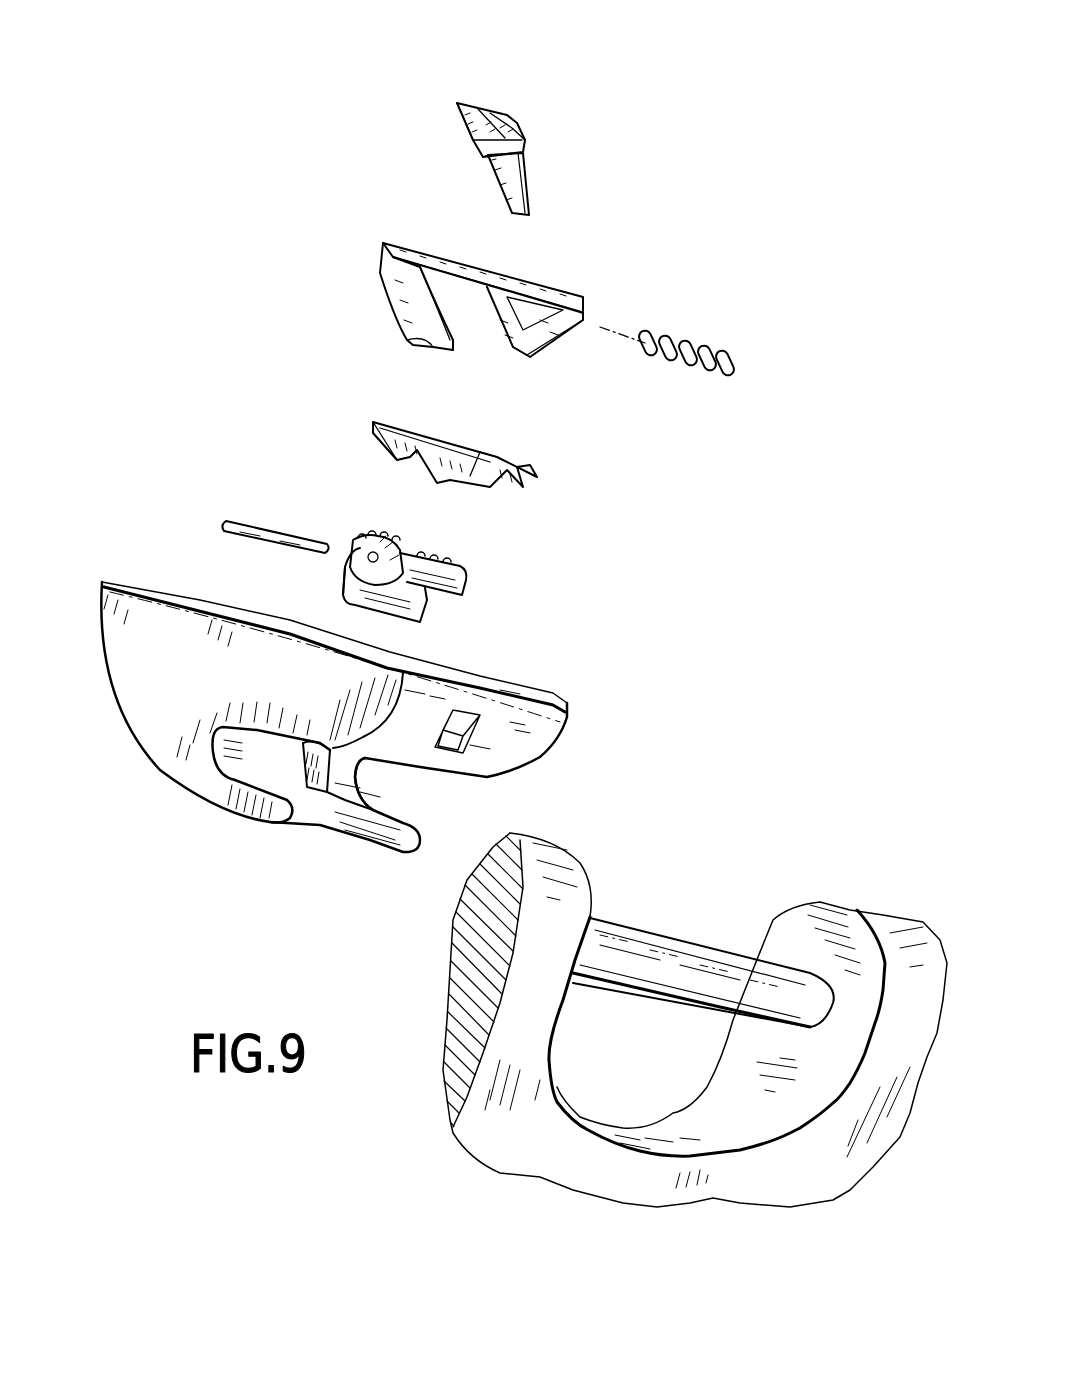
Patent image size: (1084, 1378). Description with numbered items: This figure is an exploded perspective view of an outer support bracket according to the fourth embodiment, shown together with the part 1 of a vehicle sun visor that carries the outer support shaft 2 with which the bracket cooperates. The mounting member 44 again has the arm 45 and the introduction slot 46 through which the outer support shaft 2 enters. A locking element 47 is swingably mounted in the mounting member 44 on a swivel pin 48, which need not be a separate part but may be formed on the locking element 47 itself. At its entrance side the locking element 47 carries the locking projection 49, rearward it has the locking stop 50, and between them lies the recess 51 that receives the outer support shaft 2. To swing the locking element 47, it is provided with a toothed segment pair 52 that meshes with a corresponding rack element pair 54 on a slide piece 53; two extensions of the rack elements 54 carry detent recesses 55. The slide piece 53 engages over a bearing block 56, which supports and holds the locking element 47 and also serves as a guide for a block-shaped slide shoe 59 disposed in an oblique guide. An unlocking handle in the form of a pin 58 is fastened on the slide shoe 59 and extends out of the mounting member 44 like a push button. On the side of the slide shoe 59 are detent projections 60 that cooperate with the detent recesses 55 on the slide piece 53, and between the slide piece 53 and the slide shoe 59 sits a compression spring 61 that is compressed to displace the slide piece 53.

The part of a vehicle sun visor 1 is at (517, 1002).
The outer support shaft 2 is at (693, 960).
The mounting member 44 is at (137, 673).
The arm 45 is at (260, 807).
The introduction slot 46 is at (373, 785).
The locking element 47 is at (380, 553).
The swivel pin 48 is at (240, 520).
The locking projection 49 is at (430, 600).
The locking stop 50 is at (343, 593).
The recess 51 is at (350, 550).
The toothed segment pair 52 is at (440, 553).
The slide piece 53 is at (433, 440).
The rack element pair 54 is at (380, 420).
The detent recesses 55 is at (480, 450).
The bearing block 56 is at (413, 307).
The pin 58 is at (513, 173).
The slide shoe 59 is at (503, 118).
The detent projections 60 is at (458, 103).
The compression spring 61 is at (733, 360).